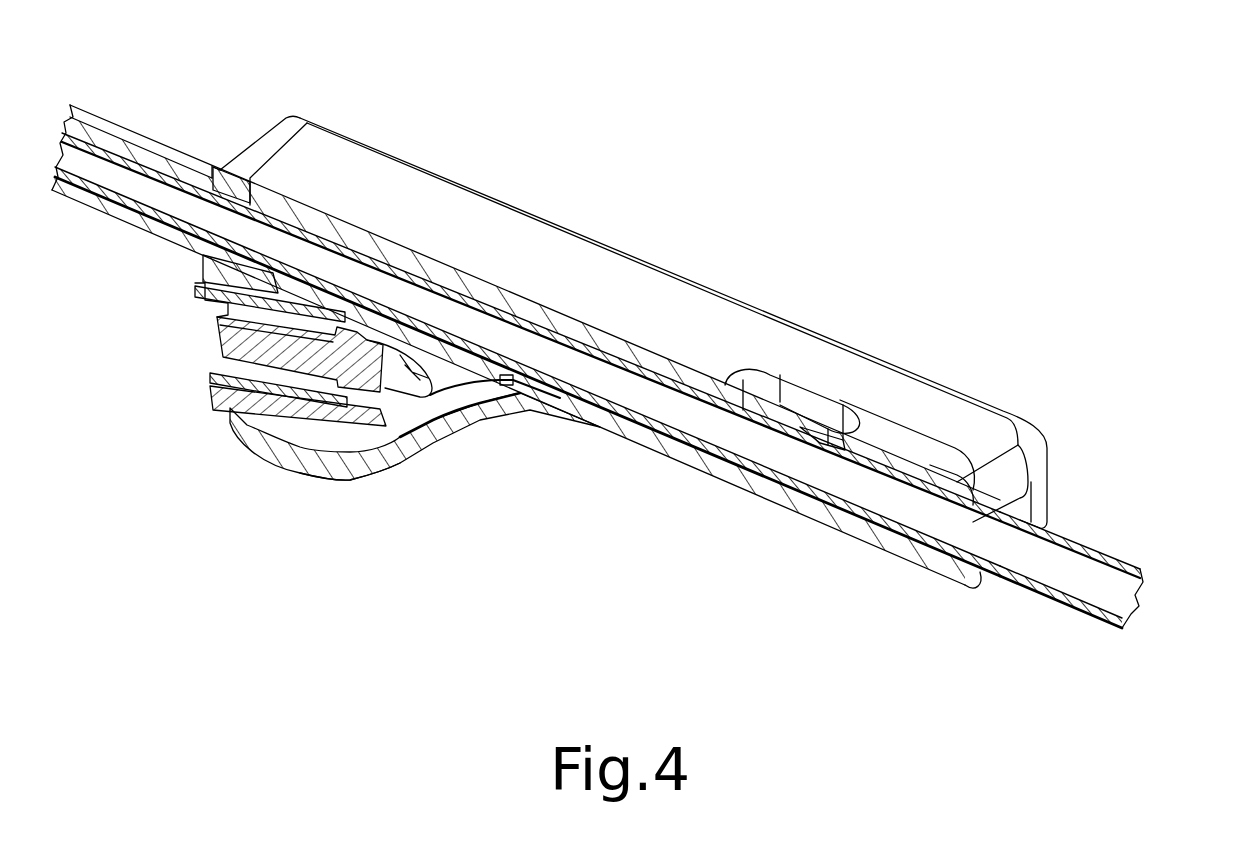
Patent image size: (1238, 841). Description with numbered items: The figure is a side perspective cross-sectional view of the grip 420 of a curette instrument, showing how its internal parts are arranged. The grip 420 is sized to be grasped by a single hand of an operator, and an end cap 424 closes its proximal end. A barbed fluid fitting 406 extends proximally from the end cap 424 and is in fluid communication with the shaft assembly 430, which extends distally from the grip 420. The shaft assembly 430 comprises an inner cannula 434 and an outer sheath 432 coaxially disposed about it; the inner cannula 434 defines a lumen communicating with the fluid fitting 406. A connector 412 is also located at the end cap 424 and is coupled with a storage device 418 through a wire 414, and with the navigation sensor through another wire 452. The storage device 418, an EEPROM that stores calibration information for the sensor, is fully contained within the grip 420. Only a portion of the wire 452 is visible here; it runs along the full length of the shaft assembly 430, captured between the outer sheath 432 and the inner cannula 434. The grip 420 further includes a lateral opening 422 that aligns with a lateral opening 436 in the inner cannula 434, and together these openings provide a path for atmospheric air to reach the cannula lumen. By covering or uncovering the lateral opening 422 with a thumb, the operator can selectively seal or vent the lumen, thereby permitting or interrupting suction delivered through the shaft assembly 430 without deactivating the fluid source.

The fluid fitting 406 is at (128, 122).
The connector 412 is at (204, 407).
The wire 414 is at (456, 408).
The storage device 418 is at (503, 388).
The grip 420 is at (614, 216).
The lateral opening 422 is at (801, 388).
The end cap 424 is at (261, 140).
The shaft assembly 430 is at (1072, 620).
The outer sheath 432 is at (1083, 545).
The inner cannula 434 is at (860, 487).
The lateral opening 436 is at (813, 436).
The wire 452 is at (535, 415).